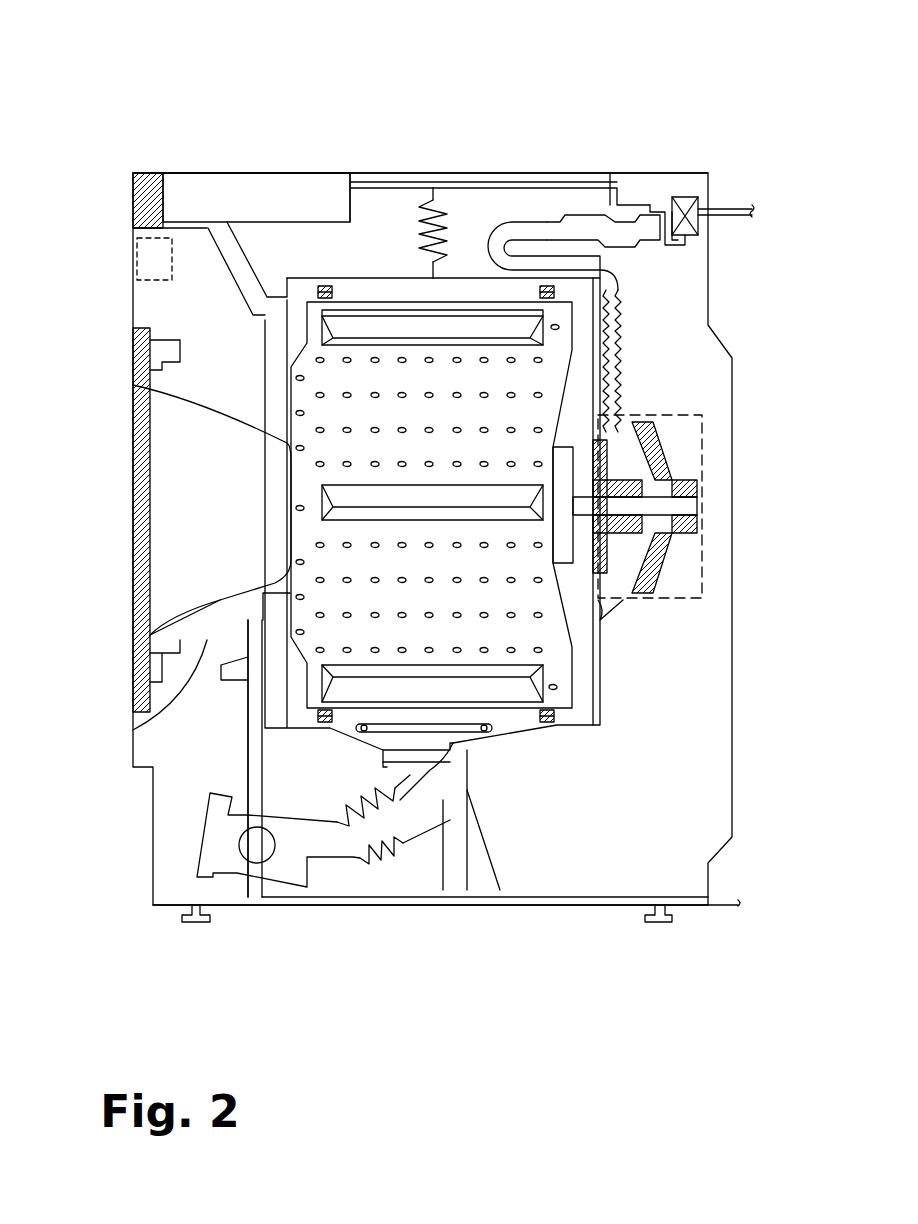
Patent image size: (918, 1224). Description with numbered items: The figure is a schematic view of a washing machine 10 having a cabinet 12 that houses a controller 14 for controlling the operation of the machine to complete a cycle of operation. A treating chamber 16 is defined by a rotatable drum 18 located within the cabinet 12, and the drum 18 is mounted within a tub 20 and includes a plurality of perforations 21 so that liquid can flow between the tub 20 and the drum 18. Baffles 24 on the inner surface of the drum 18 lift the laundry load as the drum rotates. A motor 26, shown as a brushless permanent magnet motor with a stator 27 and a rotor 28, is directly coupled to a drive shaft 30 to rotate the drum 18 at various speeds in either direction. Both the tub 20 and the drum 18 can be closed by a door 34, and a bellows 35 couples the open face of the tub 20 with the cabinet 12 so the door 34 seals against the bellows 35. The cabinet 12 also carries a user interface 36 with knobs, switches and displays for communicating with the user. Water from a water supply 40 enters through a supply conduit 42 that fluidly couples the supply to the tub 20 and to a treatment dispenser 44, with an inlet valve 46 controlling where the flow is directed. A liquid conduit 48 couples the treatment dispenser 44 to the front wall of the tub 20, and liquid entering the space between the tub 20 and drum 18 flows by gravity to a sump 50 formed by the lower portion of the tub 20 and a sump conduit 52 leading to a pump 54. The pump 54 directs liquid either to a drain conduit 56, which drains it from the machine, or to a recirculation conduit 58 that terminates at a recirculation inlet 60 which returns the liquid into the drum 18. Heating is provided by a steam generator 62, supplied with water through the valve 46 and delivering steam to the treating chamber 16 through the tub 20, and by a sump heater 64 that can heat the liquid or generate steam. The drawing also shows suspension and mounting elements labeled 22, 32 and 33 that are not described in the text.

The washing machine 10 is at (622, 32).
The cabinet 12 is at (622, 173).
The controller 14 is at (128, 267).
The treating chamber 16 is at (404, 426).
The rotatable drum 18 is at (390, 300).
The tub 20 is at (463, 278).
The perforations 21 is at (538, 395).
The suspension springs 22 is at (415, 205).
The baffles 24 is at (523, 689).
The motor 26 is at (706, 415).
The stator 27 is at (602, 438).
The rotor 28 is at (670, 462).
The drive shaft 30 is at (670, 507).
The mounting brackets 32 is at (320, 290).
The mounting pads 33 is at (326, 287).
The door 34 is at (148, 625).
The bellows 35 is at (205, 650).
The user interface 36 is at (130, 252).
The water supply 40 is at (735, 190).
The supply conduit 42 is at (553, 189).
The treatment dispenser 44 is at (268, 198).
The inlet valve 46 is at (688, 198).
The liquid conduit 48 is at (210, 277).
The sump 50 is at (474, 752).
The sump conduit 52 is at (458, 815).
The pump 54 is at (235, 885).
The drain conduit 56 is at (708, 900).
The recirculation conduit 58 is at (248, 760).
The recirculation inlet 60 is at (265, 605).
The steam generator 62 is at (643, 243).
The sump heater 64 is at (557, 722).